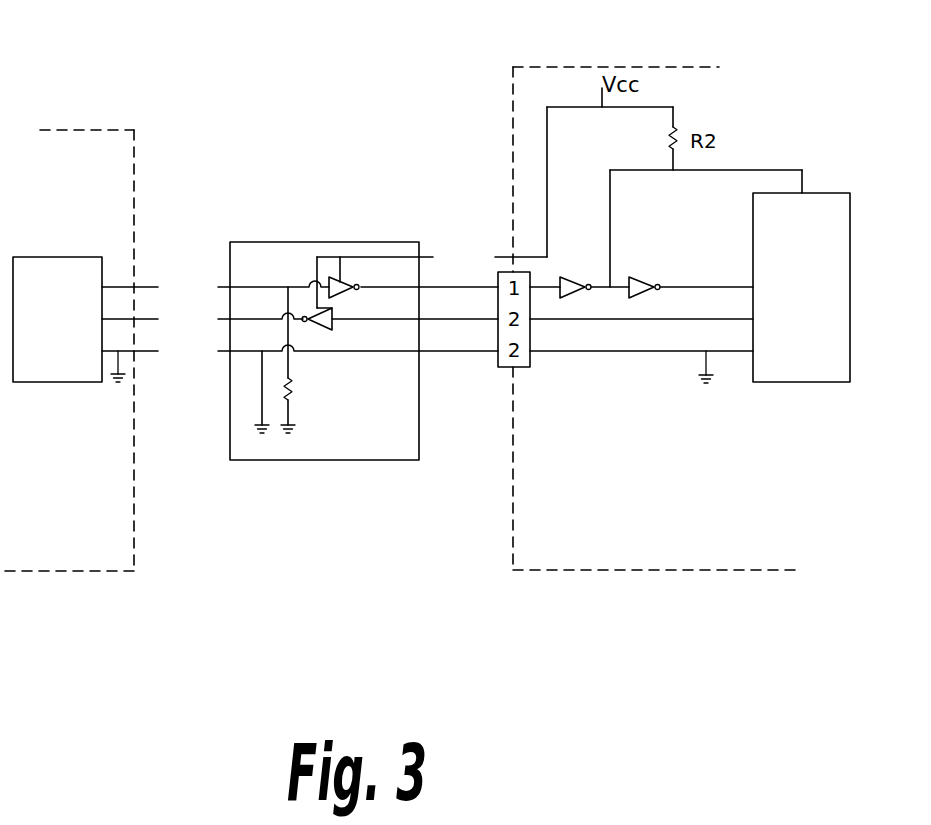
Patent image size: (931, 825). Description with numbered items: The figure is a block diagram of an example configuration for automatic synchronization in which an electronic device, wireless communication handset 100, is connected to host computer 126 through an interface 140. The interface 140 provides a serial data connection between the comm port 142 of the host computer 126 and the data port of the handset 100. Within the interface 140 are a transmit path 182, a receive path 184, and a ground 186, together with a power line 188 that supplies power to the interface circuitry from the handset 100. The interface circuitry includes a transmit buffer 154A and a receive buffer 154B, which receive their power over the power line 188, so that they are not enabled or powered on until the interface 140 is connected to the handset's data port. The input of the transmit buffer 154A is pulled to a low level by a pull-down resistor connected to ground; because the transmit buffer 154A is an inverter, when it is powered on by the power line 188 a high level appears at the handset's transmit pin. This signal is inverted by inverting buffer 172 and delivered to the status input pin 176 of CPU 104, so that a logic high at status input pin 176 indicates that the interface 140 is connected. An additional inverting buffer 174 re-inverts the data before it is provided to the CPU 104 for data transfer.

The wireless communication handset 100 is at (553, 67).
The CPU 104 is at (801, 287).
The host computer 126 is at (134, 130).
The interface 140 is at (336, 482).
The comm port 142 is at (69, 319).
The transmit buffer 154A is at (340, 294).
The receive buffer 154B is at (326, 330).
The inverting buffer 172 is at (584, 283).
The inverting buffer 174 is at (648, 281).
The status input pin 176 is at (762, 170).
The transmit path 182 is at (427, 287).
The receive path 184 is at (427, 319).
The ground 186 is at (427, 361).
The power line 188 is at (432, 187).